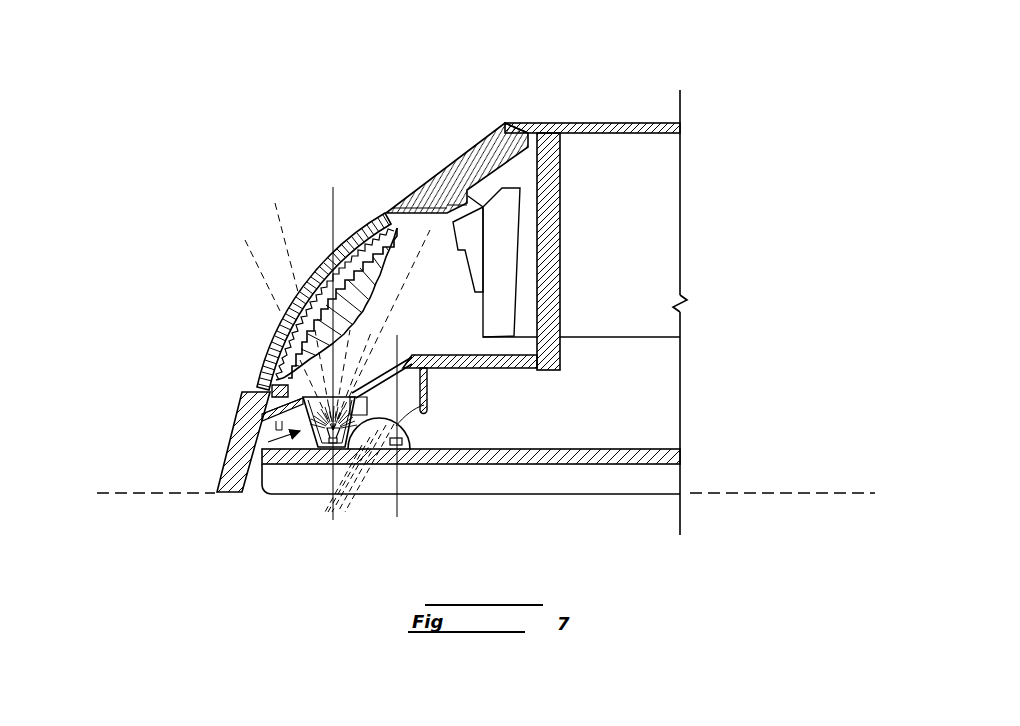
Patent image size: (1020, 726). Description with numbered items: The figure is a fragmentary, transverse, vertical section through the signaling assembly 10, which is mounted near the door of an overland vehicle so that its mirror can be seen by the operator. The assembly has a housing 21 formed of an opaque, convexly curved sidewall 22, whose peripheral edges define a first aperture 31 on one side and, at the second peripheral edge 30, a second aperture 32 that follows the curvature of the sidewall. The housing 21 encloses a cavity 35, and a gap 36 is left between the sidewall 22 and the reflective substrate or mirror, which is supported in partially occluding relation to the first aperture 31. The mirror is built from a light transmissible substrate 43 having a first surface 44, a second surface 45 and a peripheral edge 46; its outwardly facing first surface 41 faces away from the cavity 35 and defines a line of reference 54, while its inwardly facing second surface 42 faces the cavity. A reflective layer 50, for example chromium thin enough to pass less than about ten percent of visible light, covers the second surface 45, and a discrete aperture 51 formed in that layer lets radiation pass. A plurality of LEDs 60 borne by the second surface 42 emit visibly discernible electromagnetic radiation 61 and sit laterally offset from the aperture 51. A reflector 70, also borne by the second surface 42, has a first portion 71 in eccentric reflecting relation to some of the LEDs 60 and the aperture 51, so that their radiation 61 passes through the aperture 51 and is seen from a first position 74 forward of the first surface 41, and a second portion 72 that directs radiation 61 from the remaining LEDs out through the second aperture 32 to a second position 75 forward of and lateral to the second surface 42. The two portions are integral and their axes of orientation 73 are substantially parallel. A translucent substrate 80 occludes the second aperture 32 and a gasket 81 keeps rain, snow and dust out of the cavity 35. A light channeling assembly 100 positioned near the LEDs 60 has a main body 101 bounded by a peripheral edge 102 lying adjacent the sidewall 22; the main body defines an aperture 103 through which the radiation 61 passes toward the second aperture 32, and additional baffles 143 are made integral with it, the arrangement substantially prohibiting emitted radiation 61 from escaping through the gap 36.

The signaling assembly 10 is at (198, 227).
The housing 21 is at (574, 118).
The convexly curved sidewall 22 is at (505, 123).
The second peripheral edge 30 is at (420, 188).
The first aperture 31 is at (253, 490).
The second aperture 32 is at (230, 278).
The cavity 35 is at (620, 390).
The gap 36 is at (257, 472).
The first or outwardly facing surface 41 is at (593, 487).
The second or inwardly facing surface 42 is at (570, 449).
The light transmissible substrate 43 is at (657, 485).
The first surface 44 is at (530, 497).
The second surface 45 is at (512, 462).
The peripheral edge 46 is at (262, 493).
The reflective layer 50 is at (657, 449).
The aperture 51 is at (345, 462).
The line of reference 54 is at (140, 500).
The LEDs 60 is at (323, 447).
The visibly discernible electromagnetic radiation 61 is at (405, 283).
The reflector 70 is at (247, 448).
The first portion of the reflector 71 is at (430, 406).
The second portion of the reflector 72 is at (238, 403).
The axis of orientation 73 is at (333, 212).
The first position 74 is at (474, 562).
The second position 75 is at (378, 84).
The translucent substrate 80 is at (273, 337).
The gasket 81 is at (400, 212).
The light channeling assembly 100 is at (563, 318).
The main body 101 is at (563, 220).
The peripheral edge 102 is at (247, 433).
The aperture 103 is at (376, 375).
The baffles 143 is at (257, 437).